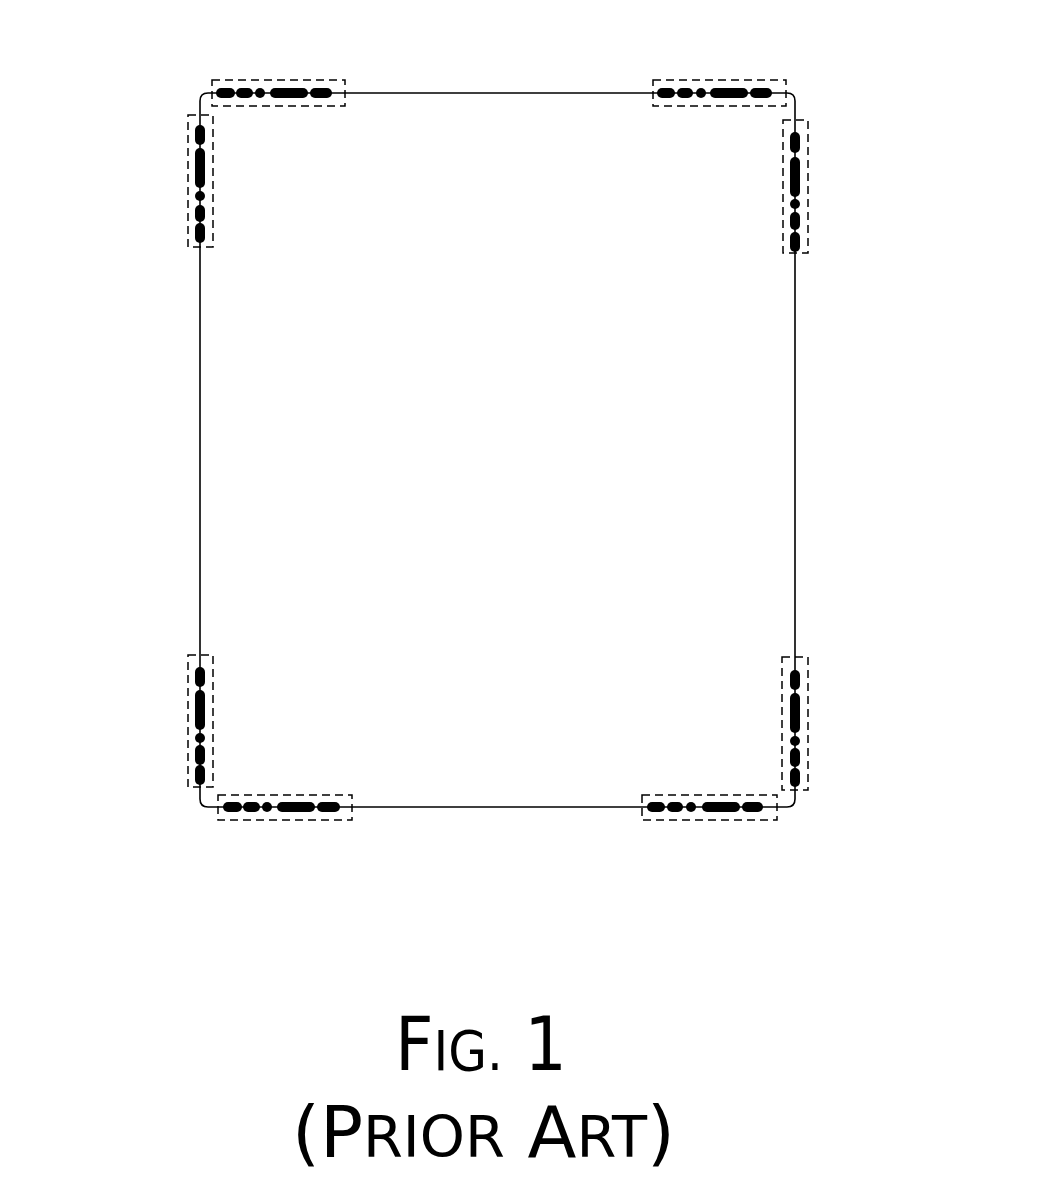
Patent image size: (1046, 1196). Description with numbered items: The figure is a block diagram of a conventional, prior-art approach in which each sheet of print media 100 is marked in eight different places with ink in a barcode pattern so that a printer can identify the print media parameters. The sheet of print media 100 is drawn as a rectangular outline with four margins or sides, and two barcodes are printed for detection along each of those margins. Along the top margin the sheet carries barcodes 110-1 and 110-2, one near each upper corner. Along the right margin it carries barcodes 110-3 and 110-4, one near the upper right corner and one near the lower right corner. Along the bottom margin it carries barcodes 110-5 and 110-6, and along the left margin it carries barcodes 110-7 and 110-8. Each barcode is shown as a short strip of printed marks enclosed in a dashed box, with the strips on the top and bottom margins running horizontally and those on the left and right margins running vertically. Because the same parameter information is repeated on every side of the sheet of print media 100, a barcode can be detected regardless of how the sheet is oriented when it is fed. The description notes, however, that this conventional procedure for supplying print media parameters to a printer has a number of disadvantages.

The print media 100 is at (495, 92).
The barcode 110-1 is at (278, 80).
The barcode 110-2 is at (717, 80).
The barcode 110-3 is at (810, 183).
The barcode 110-4 is at (808, 720).
The barcode 110-5 is at (710, 820).
The barcode 110-6 is at (287, 820).
The barcode 110-7 is at (188, 720).
The barcode 110-8 is at (188, 180).